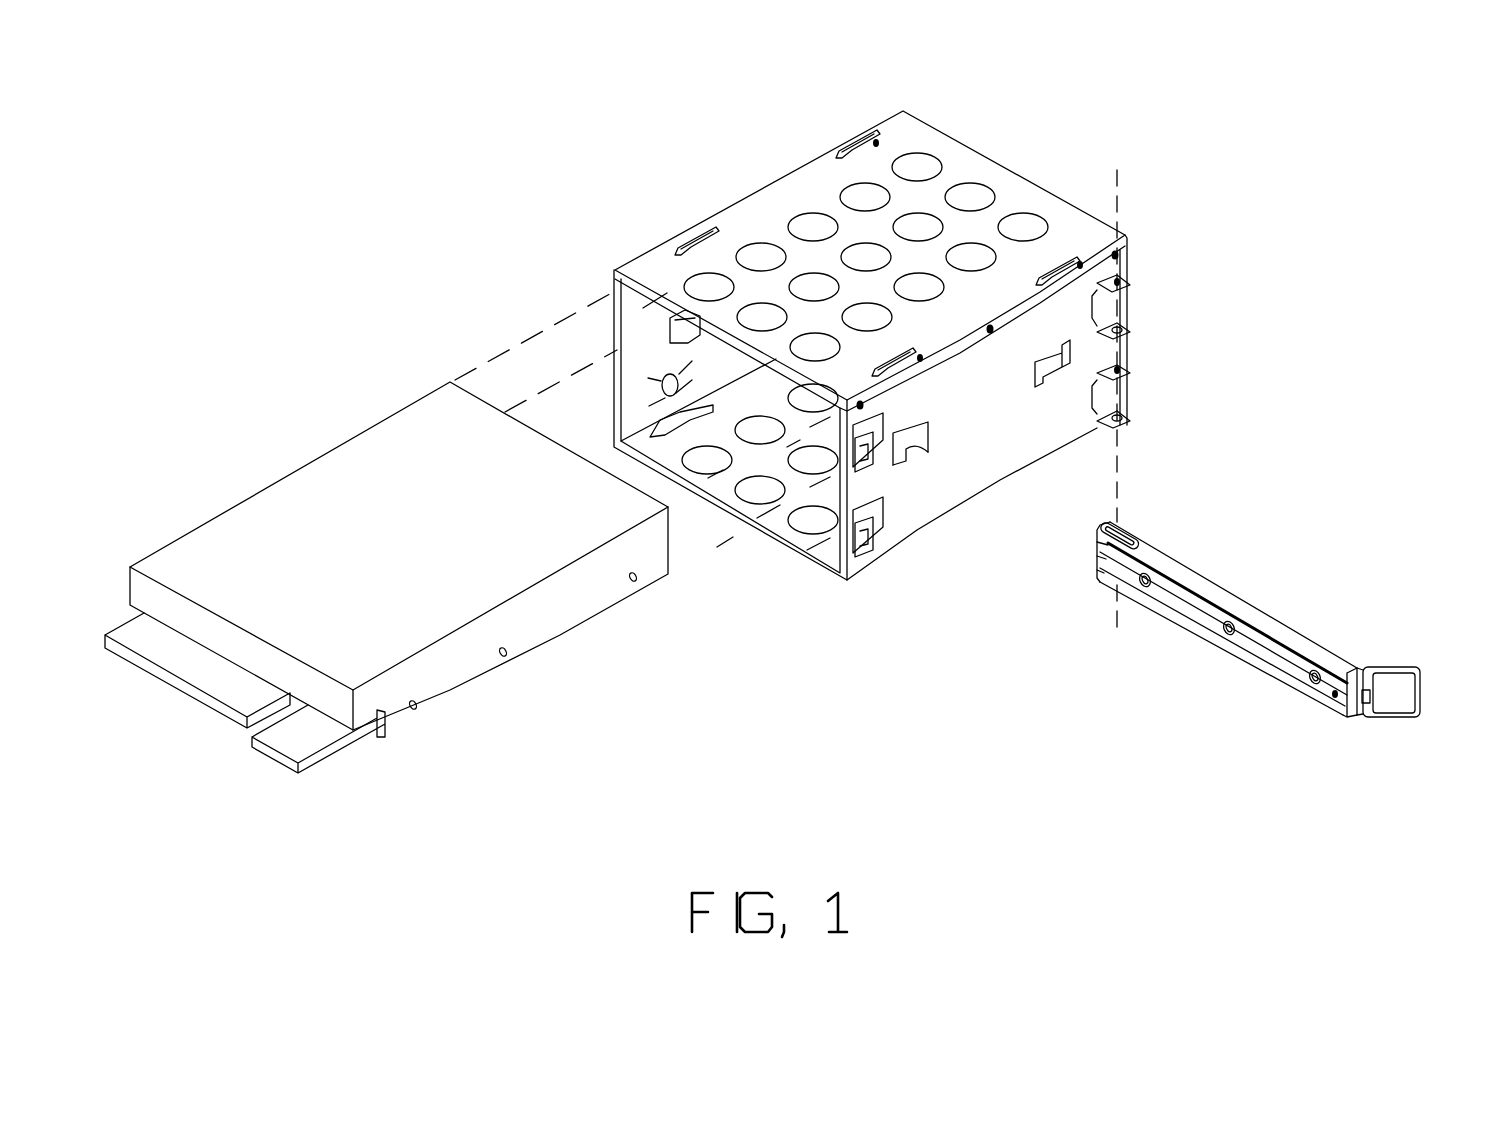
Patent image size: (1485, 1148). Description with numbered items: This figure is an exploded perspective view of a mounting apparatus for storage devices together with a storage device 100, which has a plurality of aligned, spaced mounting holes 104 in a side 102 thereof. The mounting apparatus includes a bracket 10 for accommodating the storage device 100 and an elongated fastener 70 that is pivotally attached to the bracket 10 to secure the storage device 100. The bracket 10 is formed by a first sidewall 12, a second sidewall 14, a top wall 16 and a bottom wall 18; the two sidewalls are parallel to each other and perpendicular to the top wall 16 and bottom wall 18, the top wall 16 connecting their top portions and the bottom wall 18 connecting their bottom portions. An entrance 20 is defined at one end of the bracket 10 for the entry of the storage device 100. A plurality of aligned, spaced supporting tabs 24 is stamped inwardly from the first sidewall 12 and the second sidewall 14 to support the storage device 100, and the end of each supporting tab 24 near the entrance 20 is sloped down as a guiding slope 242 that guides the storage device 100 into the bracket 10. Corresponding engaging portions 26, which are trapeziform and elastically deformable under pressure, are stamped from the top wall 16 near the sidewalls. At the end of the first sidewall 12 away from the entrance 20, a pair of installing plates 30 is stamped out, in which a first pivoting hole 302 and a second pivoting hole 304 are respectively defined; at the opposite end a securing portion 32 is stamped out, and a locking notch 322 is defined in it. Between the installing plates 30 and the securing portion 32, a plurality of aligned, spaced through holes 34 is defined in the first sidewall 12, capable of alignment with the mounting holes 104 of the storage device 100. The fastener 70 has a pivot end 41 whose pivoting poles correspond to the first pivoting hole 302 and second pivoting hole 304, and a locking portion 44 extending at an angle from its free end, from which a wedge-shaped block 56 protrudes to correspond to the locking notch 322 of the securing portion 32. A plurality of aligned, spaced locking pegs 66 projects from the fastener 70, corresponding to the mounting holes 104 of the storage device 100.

The bracket 10 is at (774, 165).
The first sidewall 12 is at (1044, 432).
The second sidewall 14 is at (637, 331).
The top wall 16 is at (980, 171).
The bottom wall 18 is at (780, 530).
The entrance 20 is at (827, 493).
The supporting tabs 24 is at (930, 435).
The guiding slope 242 is at (903, 443).
The engaging portions 26 is at (915, 352).
The installing plates 30 is at (1123, 280).
The first pivoting hole 302 is at (1128, 287).
The second pivoting hole 304 is at (1122, 340).
The securing portion 32 is at (878, 440).
The locking notch 322 is at (850, 465).
The through holes 34 is at (1117, 305).
The pivot end 41 is at (1140, 543).
The locking portion 44 is at (1400, 668).
The wedge-shaped block 56 is at (1363, 707).
The locking pegs 66 is at (1335, 703).
The fastener 70 is at (1237, 593).
The storage device 100 is at (343, 505).
The side 102 is at (478, 652).
The mounting holes 104 is at (415, 708).